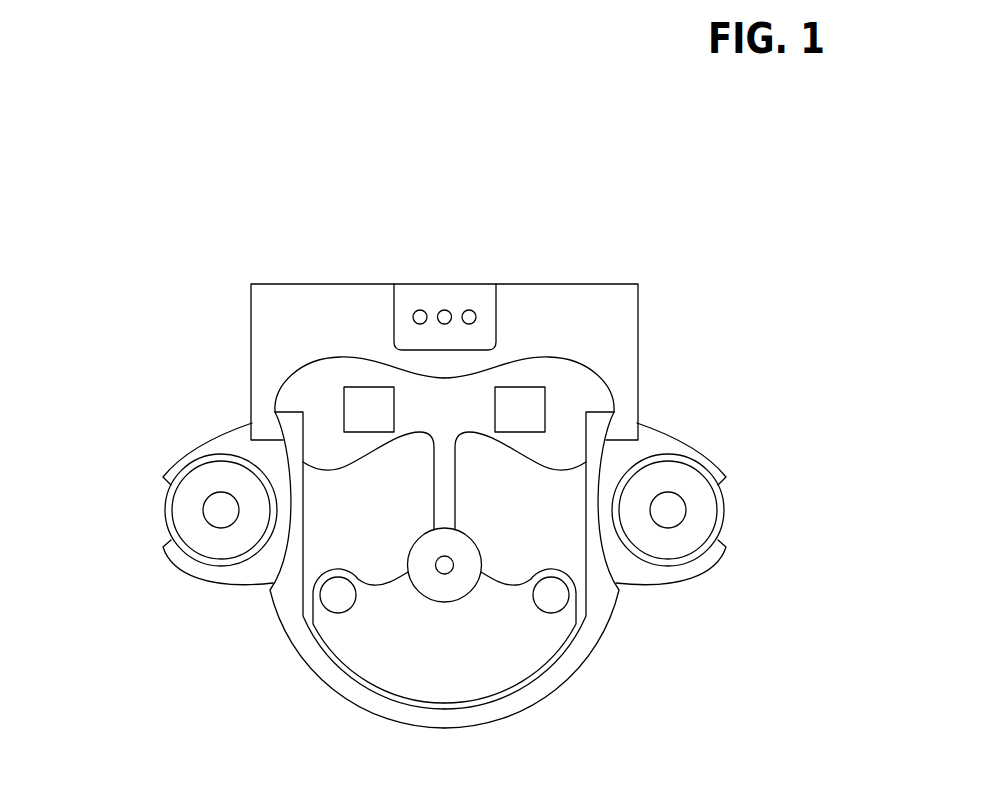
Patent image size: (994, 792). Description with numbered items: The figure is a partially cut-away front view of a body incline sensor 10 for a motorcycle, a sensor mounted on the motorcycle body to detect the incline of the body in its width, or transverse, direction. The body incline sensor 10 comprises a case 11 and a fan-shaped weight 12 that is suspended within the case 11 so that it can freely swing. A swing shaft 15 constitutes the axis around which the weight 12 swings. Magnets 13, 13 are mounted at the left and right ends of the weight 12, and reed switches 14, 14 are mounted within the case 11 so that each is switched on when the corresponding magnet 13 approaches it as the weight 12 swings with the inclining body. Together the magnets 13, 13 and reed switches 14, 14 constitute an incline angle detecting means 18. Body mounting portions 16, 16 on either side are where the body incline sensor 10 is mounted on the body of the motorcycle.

The body incline sensor 10 is at (125, 282).
The case 11 is at (251, 346).
The fan-shaped weight 12 is at (510, 580).
The magnets 13 is at (338, 613).
The reed switches 14 is at (363, 387).
The swing shaft 15 is at (438, 574).
The body mounting portions 16 is at (165, 508).
The incline angle detecting means 18 is at (560, 412).